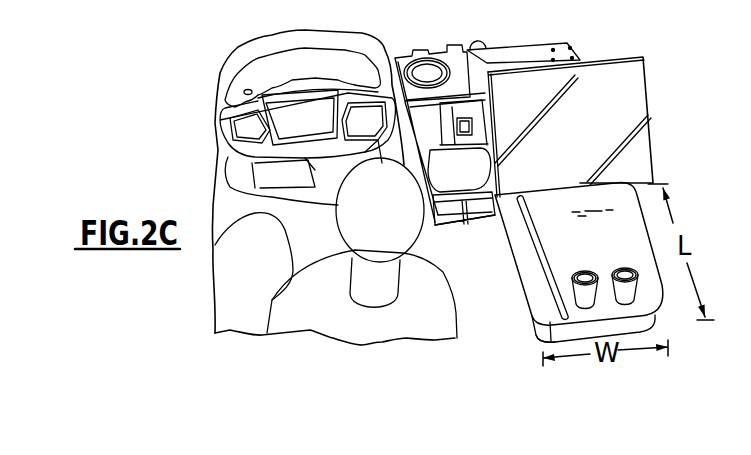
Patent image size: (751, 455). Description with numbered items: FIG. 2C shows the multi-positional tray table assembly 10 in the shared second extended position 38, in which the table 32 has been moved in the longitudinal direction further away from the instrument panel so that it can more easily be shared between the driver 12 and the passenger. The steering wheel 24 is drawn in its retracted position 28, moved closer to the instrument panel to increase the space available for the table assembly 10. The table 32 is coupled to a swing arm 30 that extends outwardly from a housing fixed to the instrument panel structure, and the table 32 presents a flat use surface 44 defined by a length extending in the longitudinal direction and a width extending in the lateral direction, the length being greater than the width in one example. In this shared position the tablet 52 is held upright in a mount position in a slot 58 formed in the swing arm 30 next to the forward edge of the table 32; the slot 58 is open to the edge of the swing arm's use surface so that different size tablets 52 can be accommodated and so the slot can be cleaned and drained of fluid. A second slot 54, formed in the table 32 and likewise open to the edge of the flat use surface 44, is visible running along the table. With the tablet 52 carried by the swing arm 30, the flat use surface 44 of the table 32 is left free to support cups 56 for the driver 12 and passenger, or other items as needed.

The multi-positional tray table assembly 10 is at (503, 300).
The driver 12 is at (411, 218).
The steering wheel 24 is at (275, 47).
The retracted position 28 is at (232, 43).
The swing arm 30 is at (462, 167).
The table 32 is at (543, 332).
The second extended position 38 is at (676, 155).
The flat use surface 44 is at (648, 296).
The tablet 52 is at (588, 92).
The slot 54 is at (543, 305).
The cups 56 is at (592, 270).
The slot 58 is at (498, 228).